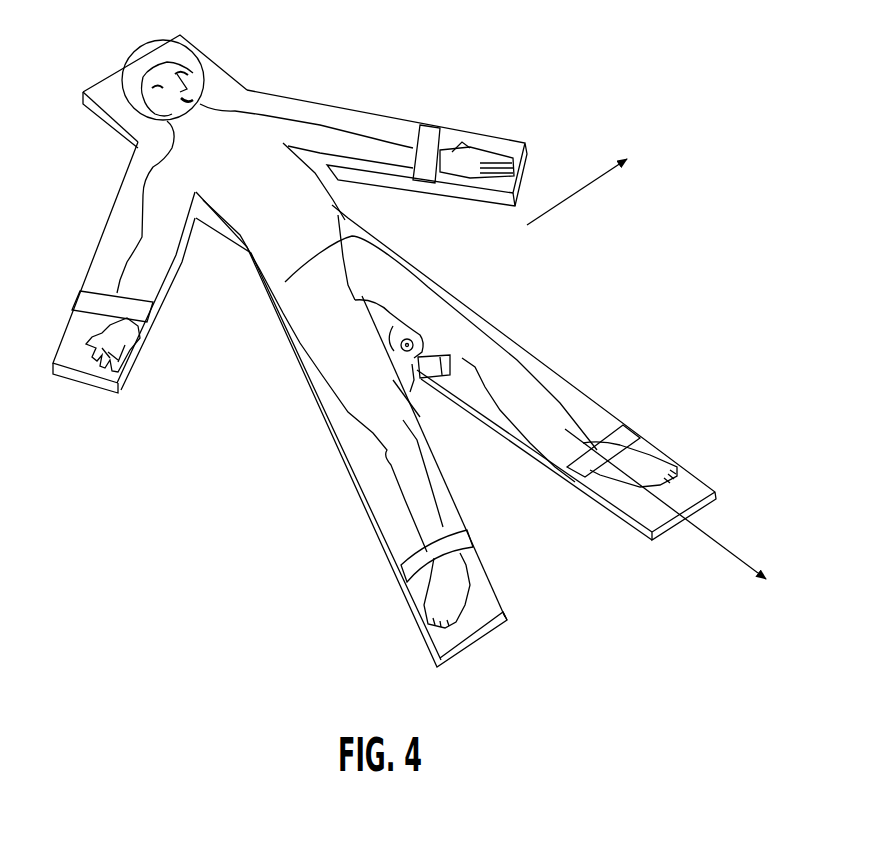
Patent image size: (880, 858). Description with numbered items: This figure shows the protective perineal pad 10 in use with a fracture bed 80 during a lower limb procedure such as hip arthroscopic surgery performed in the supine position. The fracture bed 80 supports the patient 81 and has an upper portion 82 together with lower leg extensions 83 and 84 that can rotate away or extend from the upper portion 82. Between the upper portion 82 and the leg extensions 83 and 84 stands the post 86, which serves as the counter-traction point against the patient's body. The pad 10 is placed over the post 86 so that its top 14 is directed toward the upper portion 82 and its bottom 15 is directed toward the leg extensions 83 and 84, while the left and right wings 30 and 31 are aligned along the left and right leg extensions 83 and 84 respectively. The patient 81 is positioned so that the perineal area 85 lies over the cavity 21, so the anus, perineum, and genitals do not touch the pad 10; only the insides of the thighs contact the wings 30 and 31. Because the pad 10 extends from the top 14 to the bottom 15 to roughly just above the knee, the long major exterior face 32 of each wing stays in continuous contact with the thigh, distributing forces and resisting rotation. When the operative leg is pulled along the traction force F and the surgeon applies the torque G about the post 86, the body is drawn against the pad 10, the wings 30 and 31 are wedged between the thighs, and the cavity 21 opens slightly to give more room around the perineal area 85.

The perineal pad 10 is at (470, 360).
The top 14 is at (292, 348).
The bottom 15 is at (445, 388).
The cavity 21 is at (353, 295).
The left wing 30 is at (405, 360).
The right wing 31 is at (388, 304).
The major exterior face 32 is at (392, 387).
The fracture bed 80 is at (693, 467).
The patient 81 is at (249, 140).
The upper portion 82 is at (413, 254).
The lower leg extension 83 is at (632, 522).
The lower leg extension 84 is at (410, 607).
The perineal area 85 is at (360, 272).
The post 86 is at (461, 355).
The torque G is at (391, 328).
The traction force F is at (588, 181).